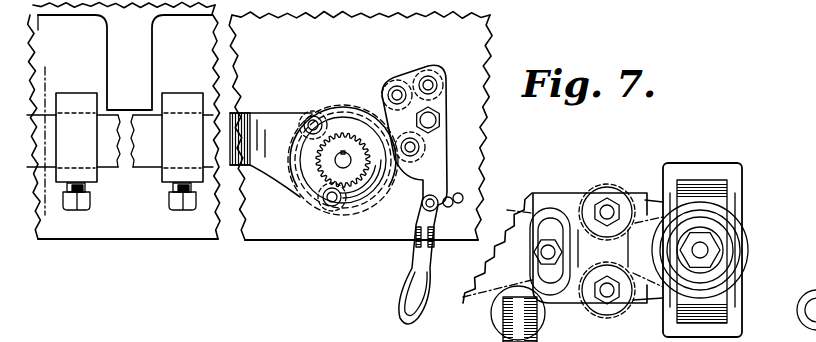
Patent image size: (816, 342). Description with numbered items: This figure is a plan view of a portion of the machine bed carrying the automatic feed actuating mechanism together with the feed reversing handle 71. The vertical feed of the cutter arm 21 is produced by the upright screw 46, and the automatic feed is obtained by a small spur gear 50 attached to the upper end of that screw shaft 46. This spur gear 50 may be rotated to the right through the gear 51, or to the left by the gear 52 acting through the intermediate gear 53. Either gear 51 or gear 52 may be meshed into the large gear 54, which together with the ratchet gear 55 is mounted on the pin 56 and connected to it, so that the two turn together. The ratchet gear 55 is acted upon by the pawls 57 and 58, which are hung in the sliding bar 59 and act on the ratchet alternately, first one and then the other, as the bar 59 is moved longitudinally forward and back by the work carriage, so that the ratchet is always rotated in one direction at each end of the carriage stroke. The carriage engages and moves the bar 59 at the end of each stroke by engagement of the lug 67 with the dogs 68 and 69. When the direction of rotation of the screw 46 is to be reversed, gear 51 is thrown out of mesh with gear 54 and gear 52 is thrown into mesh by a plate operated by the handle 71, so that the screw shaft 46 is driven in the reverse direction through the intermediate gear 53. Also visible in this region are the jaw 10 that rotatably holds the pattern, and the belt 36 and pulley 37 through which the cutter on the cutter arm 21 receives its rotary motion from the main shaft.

The jaw 10 is at (92, 66).
The lug 67 is at (142, 68).
The dog 68 is at (95, 182).
The sliding bar 59 is at (150, 152).
The dog 69 is at (195, 182).
The pawl 58 is at (332, 120).
The gear 51 is at (395, 187).
The pin 56 is at (343, 160).
The pawl 57 is at (352, 197).
The large gear 54 is at (327, 117).
The ratchet gear 55 is at (338, 182).
The upright screw 46 is at (432, 127).
The gear 52 is at (388, 97).
The intermediate gear 53 is at (433, 80).
The spur gear 50 is at (440, 118).
The handle 71 is at (395, 308).
The belt 36 is at (507, 207).
The cutter arm 21 is at (645, 193).
The pulley 37 is at (750, 243).